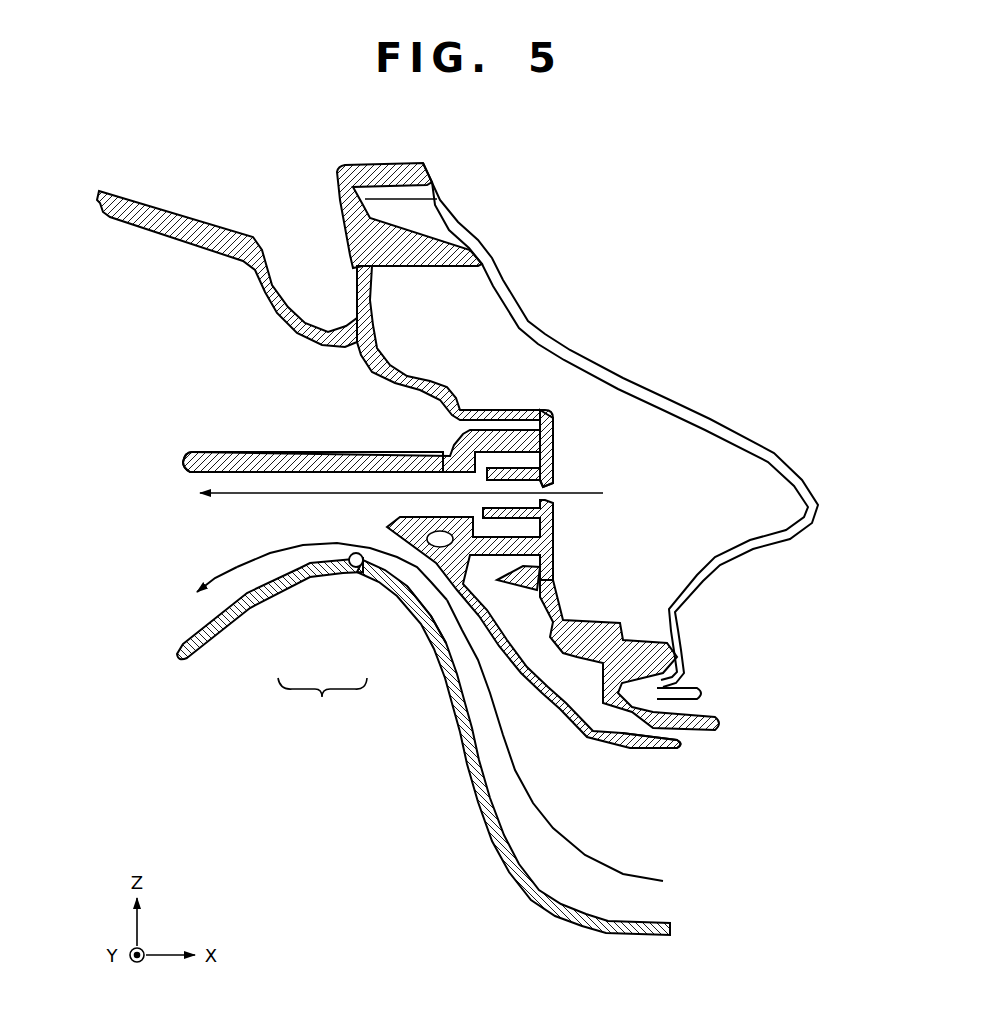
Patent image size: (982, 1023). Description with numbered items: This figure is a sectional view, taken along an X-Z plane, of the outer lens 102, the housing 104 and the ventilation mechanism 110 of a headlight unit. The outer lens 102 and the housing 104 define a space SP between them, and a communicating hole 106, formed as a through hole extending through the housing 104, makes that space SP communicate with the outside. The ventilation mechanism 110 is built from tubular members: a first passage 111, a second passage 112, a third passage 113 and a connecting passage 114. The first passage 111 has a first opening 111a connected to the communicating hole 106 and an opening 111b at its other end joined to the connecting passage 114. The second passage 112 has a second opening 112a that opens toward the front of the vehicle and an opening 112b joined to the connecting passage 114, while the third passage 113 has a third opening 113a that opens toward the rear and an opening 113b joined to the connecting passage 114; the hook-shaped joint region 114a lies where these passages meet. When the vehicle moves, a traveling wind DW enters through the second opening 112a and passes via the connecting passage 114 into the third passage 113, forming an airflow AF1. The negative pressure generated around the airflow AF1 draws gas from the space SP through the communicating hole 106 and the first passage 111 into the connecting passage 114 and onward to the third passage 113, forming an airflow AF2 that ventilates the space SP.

The outer lens 102 is at (640, 380).
The housing 104 is at (284, 288).
The communicating hole 106 is at (553, 490).
The ventilation mechanism 110 is at (433, 826).
The first passage 111 is at (557, 493).
The first opening 111a is at (537, 460).
The opening 111b is at (432, 476).
The second passage 112 is at (550, 825).
The second opening 112a is at (662, 757).
The opening 112b is at (427, 605).
The third passage 113 is at (245, 535).
The third opening 113a is at (190, 608).
The opening 113b is at (240, 582).
The connecting passage 114 is at (322, 703).
The joint hook 114a is at (353, 567).
The space SP is at (780, 489).
The airflow AF1 is at (622, 889).
The airflow AF2 is at (428, 492).
The traveling wind DW is at (670, 875).